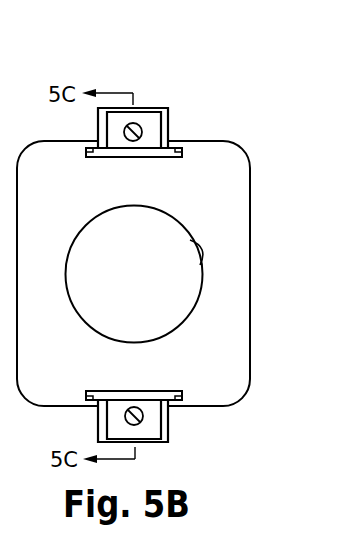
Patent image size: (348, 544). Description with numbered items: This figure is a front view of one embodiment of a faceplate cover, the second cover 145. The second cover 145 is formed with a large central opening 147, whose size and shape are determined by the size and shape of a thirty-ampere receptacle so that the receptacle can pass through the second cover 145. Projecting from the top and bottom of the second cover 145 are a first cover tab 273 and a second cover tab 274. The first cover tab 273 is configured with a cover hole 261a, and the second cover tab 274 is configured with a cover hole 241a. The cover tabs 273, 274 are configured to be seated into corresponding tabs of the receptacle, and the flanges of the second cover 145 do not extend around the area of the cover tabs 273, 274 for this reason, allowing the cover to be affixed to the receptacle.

The second cover 145 is at (249, 189).
The opening 147 is at (200, 265).
The first cover tab 273 is at (150, 118).
The second cover tab 274 is at (145, 432).
The cover hole 261a is at (142, 133).
The cover hole 241a is at (143, 419).